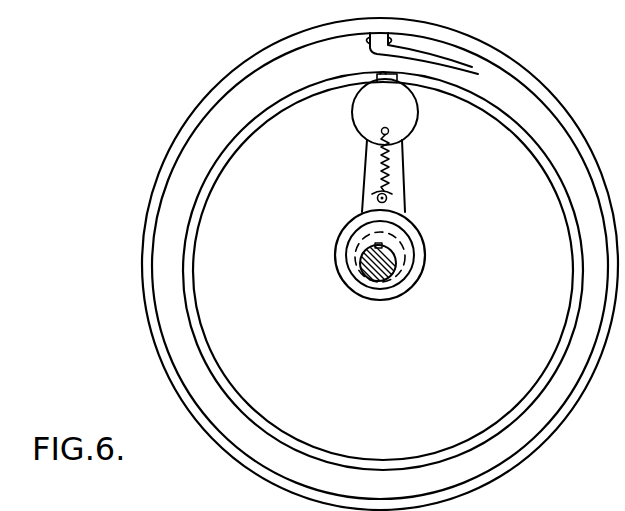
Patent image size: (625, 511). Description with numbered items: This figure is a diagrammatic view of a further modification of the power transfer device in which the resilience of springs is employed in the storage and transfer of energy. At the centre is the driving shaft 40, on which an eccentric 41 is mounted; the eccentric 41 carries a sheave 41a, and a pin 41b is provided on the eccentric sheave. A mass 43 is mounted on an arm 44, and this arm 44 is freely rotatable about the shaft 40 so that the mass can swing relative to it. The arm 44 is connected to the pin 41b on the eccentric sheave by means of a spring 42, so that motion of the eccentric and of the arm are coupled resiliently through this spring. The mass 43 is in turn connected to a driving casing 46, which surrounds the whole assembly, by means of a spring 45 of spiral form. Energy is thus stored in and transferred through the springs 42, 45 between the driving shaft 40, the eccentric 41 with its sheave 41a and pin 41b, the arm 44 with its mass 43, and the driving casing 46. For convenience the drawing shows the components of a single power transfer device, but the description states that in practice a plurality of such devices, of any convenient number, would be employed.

The driving shaft 40 is at (378, 272).
The eccentric 41 is at (408, 249).
The sheave 41a is at (410, 277).
The pin 41b is at (388, 202).
The spring 42 is at (390, 167).
The mass 43 is at (410, 123).
The arm 44 is at (376, 199).
The spring of spiral form 45 is at (225, 372).
The driving casing 46 is at (528, 70).